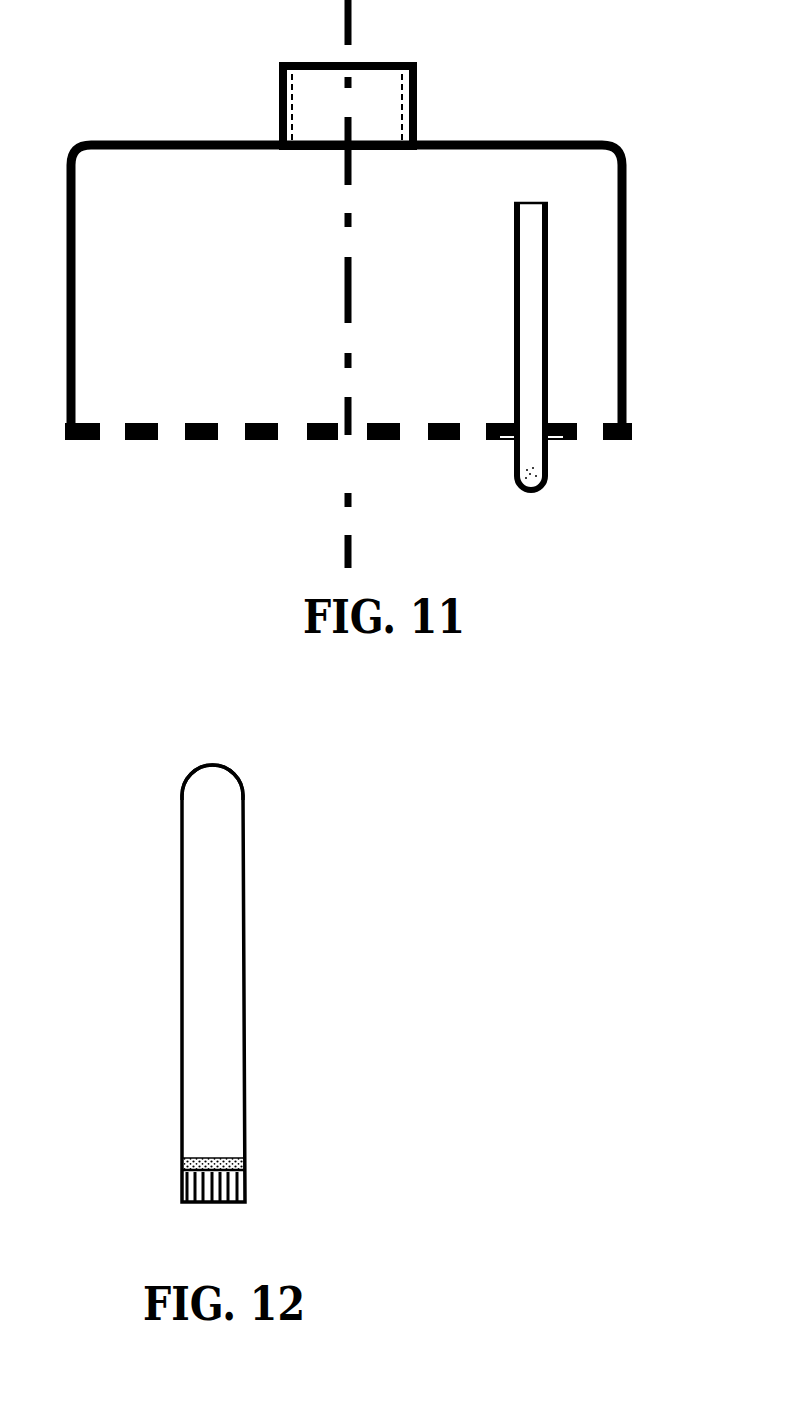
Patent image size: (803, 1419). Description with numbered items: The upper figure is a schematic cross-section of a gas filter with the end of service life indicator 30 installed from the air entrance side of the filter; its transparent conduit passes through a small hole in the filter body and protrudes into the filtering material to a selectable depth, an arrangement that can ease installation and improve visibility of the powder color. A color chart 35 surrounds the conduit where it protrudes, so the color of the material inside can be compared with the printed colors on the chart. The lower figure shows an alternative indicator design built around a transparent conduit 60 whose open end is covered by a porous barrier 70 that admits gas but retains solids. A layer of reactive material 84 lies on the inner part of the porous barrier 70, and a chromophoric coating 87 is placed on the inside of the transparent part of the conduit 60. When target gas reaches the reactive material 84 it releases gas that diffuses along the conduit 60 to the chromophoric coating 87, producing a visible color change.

In FIG. 11, the end of service life indicator 30 is at (555, 474).
In FIG. 11, the color chart 35 is at (502, 443).
In FIG. 12, the transparent conduit 60 is at (252, 885).
In FIG. 12, the porous barrier 70 is at (255, 1187).
In FIG. 12, the layer of reactive material 84 is at (182, 1164).
In FIG. 12, the chromophoric coating 87 is at (175, 801).